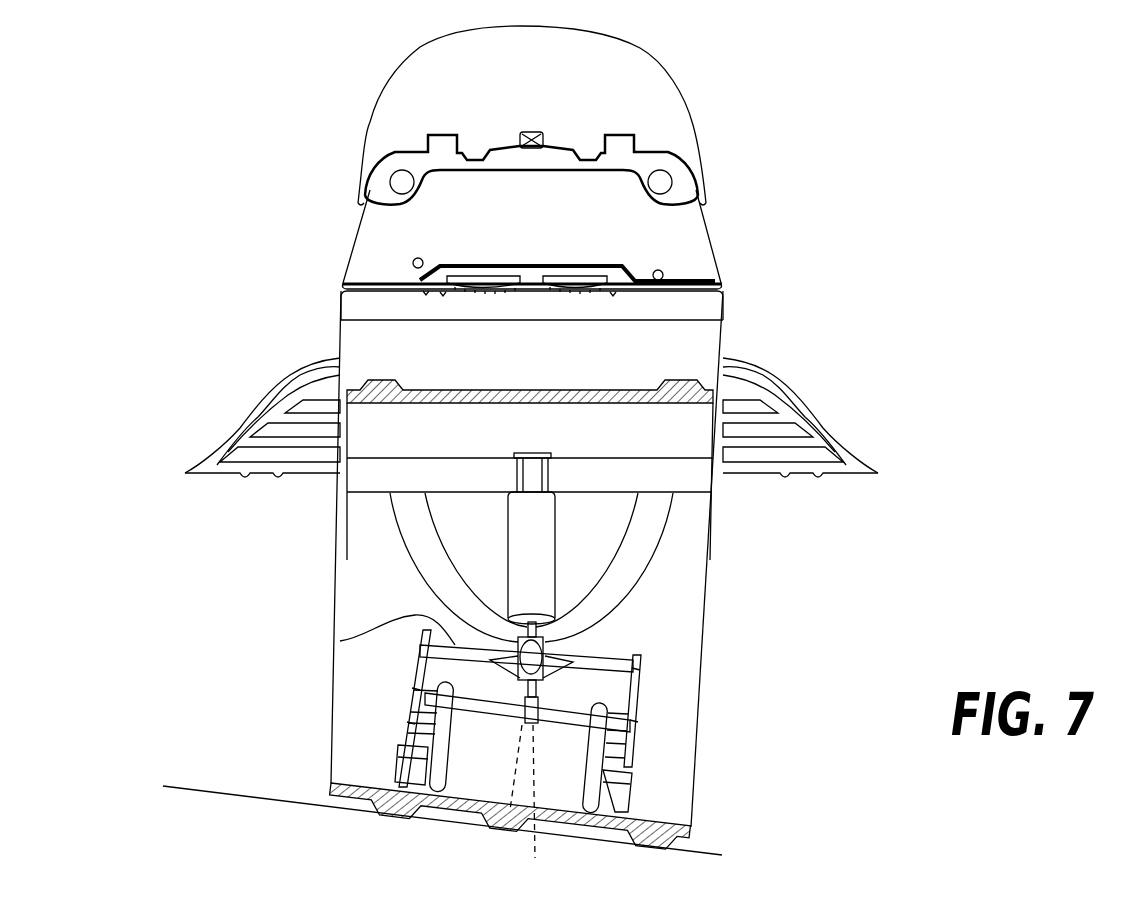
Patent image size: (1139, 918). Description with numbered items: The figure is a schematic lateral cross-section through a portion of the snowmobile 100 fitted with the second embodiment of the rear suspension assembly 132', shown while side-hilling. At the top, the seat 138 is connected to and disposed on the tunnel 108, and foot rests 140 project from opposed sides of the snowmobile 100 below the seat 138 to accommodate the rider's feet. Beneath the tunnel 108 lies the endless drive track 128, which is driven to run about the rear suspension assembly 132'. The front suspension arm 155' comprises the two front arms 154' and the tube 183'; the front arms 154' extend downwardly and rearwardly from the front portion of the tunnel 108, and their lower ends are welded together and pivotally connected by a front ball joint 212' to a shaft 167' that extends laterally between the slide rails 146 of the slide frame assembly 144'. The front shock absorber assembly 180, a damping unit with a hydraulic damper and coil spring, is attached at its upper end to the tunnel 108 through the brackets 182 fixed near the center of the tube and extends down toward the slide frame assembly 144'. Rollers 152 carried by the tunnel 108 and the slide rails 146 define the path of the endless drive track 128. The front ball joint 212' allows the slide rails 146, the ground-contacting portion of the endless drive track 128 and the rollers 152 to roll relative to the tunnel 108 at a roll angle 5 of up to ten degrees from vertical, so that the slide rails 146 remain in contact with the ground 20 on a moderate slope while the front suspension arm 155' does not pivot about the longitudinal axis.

The seat 138 is at (630, 79).
The snowmobile 100 is at (792, 222).
The tunnel 108 is at (723, 320).
The endless drive track 128 is at (433, 393).
The tube 183' is at (450, 448).
The brackets 182 is at (513, 463).
The front shock absorber assembly 180 is at (532, 508).
The front arms 154' is at (525, 567).
The foot rests 140 is at (256, 478).
The slide frame assembly 144' is at (721, 580).
The rear suspension assembly 132' is at (752, 605).
The front suspension arm 155' is at (709, 651).
The shaft 167' is at (458, 647).
The front ball joint 212' is at (590, 703).
The rollers 152 is at (420, 722).
The slide rails 146 is at (406, 780).
The roll angle 5 is at (562, 850).
The ground 20 is at (218, 790).